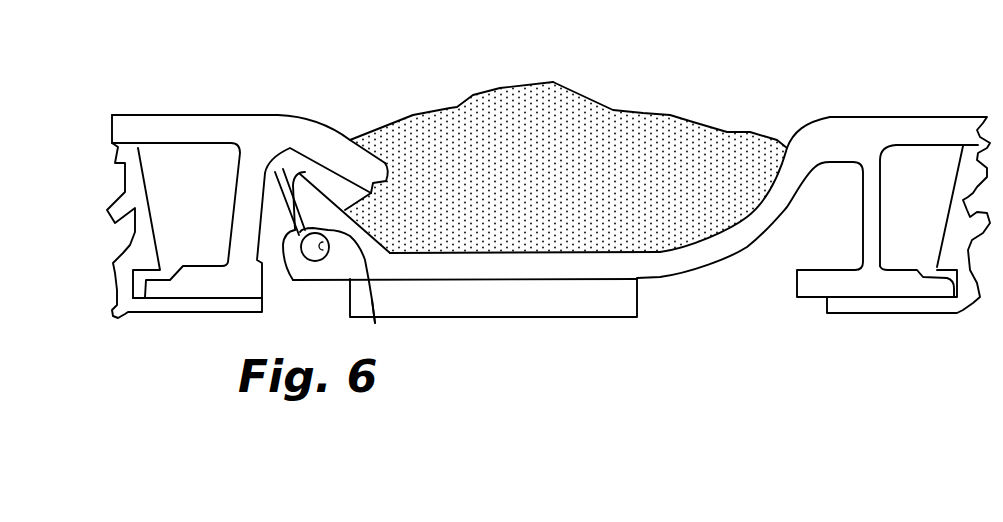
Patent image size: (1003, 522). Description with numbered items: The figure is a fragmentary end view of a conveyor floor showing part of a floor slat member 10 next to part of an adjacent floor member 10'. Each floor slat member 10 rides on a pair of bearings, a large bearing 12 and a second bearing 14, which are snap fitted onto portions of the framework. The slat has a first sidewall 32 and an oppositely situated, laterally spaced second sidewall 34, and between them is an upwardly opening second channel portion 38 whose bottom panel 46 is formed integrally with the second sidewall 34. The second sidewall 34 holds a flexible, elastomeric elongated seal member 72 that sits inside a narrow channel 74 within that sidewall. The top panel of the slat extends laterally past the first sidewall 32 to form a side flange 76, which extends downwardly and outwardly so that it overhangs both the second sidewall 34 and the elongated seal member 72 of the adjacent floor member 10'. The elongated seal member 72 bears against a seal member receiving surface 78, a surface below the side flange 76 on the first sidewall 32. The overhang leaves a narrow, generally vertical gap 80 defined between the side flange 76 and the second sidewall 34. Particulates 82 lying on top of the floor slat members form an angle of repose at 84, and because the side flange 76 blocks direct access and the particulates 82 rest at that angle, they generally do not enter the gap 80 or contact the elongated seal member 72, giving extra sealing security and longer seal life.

The floor slat member 10 is at (248, 159).
The adjacent floor member 10' is at (908, 170).
The large bearing 12 is at (157, 188).
The bearing 14 is at (637, 302).
The first sidewall 32 is at (242, 215).
The second sidewall 34 is at (345, 260).
The second channel portion 38 is at (730, 262).
The bottom panel 46 is at (510, 270).
The elongated seal member 72 is at (271, 195).
The narrow channel 74 is at (375, 318).
The side flange 76 is at (349, 137).
The seal member receiving surface 78 is at (262, 203).
The gap 80 is at (313, 172).
The particulates 82 is at (640, 122).
The angle of repose 84 is at (455, 122).